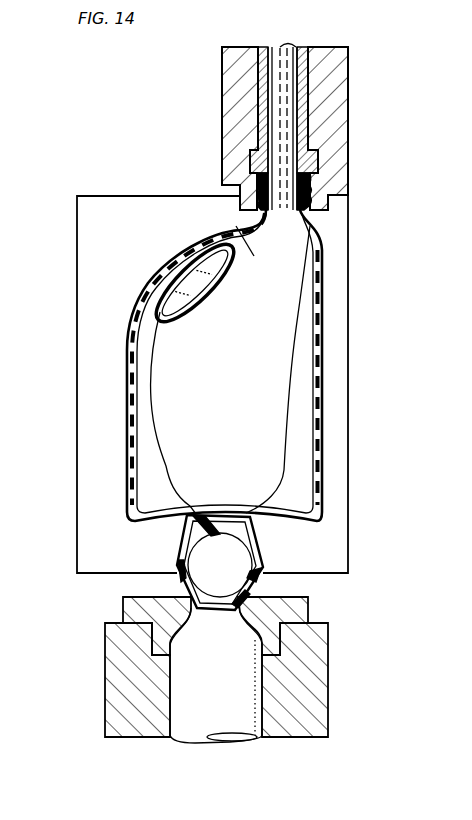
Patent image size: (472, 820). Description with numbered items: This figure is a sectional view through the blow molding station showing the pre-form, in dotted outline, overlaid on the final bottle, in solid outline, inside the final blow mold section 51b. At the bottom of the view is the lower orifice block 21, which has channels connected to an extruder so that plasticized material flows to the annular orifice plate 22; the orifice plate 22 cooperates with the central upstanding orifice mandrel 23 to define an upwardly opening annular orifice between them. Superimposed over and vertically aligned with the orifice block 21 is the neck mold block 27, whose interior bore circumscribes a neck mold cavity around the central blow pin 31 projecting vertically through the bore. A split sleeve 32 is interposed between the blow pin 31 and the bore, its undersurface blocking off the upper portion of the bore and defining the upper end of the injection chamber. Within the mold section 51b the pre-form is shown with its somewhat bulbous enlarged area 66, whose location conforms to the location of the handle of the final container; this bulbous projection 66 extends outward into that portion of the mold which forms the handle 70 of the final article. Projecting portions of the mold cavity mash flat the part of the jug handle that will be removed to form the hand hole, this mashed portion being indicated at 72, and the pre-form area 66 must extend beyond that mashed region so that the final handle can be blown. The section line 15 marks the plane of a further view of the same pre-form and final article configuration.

The section line 15- 15 is at (118, 286).
The lower orifice block 21 is at (318, 694).
The annular orifice plate 22 is at (304, 607).
The orifice mandrel 23 is at (223, 743).
The neck mold block 27 is at (340, 108).
The blow pin 31 is at (272, 88).
The split sleeve 32 is at (302, 46).
The final blow mold section 51b is at (126, 206).
The bulbous enlarged area 66 is at (256, 249).
The handle 70 is at (161, 271).
The mashed handle portion 72 is at (188, 302).